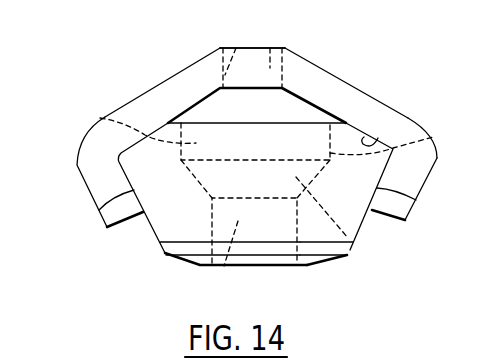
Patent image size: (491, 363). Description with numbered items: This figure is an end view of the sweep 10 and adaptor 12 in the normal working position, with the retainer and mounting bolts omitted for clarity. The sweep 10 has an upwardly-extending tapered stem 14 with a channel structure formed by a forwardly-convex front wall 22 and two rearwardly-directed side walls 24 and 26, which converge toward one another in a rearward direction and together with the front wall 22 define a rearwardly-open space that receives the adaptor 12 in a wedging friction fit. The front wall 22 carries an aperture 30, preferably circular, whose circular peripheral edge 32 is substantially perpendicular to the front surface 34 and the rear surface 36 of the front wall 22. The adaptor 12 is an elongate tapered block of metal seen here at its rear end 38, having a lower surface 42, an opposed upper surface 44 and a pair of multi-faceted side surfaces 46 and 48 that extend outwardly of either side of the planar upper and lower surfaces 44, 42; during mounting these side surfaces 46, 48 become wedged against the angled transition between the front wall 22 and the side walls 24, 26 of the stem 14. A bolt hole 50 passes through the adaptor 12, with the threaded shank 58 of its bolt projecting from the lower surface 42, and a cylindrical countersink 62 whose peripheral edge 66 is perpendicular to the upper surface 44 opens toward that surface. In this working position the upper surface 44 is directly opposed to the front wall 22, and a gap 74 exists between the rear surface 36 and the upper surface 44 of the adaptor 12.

The sweep 10 is at (113, 90).
The adaptor 12 is at (368, 228).
The stem 14 is at (367, 82).
The front wall 22 is at (177, 85).
The side wall 24 is at (100, 180).
The side wall 26 is at (417, 172).
The aperture 30 is at (270, 46).
The circular peripheral edge 32 is at (236, 47).
The front surface 34 is at (388, 103).
The rear surface 36 is at (380, 137).
The rear end 38 is at (160, 223).
The lower surface 42 is at (255, 267).
The upper surface 44 is at (303, 123).
The side surface 46 is at (416, 200).
The side surface 48 is at (99, 210).
The bolt hole 50 is at (224, 266).
The threaded shank 58 is at (352, 243).
The countersink 62 is at (100, 118).
The peripheral edge 66 is at (433, 137).
The gap 74 is at (262, 116).